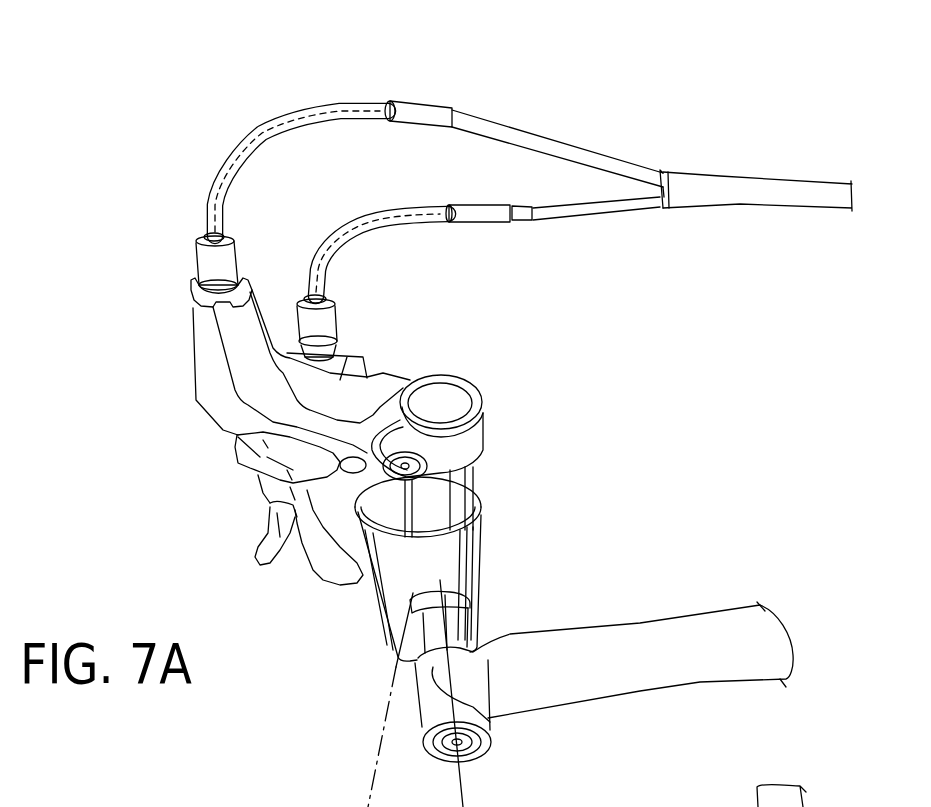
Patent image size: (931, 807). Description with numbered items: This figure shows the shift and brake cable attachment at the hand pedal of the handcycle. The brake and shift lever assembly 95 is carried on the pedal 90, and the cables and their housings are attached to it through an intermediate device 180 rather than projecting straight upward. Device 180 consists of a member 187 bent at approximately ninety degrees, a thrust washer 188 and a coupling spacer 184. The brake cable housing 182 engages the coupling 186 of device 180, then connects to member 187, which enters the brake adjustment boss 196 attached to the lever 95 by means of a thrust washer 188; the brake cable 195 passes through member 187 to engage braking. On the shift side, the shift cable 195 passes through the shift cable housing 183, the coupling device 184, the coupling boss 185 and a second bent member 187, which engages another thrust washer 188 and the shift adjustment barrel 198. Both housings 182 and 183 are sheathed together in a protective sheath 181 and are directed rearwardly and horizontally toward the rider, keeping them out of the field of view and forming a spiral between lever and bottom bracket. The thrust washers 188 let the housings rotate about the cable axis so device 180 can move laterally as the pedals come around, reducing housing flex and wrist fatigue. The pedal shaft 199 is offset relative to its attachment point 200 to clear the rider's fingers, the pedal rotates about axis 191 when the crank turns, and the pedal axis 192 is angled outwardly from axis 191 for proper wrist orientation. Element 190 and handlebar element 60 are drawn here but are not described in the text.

The handlebar 60 is at (707, 620).
The pedal 90 is at (472, 563).
The brake and shift lever assembly 95 is at (258, 474).
The intermediate device 180 is at (283, 90).
The protective sheath 181 is at (750, 181).
The brake cable housing 182 is at (553, 140).
The shift cable housing 183 is at (590, 212).
The coupling spacer 184 is at (523, 221).
The coupling boss 185 is at (482, 210).
The coupling 186 is at (424, 108).
The member bent at approximately 90 degrees 187 is at (249, 148).
The thrust washer 188 is at (196, 245).
The clamp 190 is at (470, 485).
The axis 191 is at (462, 782).
The pedal axis 192 is at (385, 718).
The brake cable / shift cable 195 is at (232, 203).
The brake adjustment boss 196 is at (193, 300).
The shift adjustment barrel 198 is at (340, 342).
The shaft 199 is at (460, 637).
The attachment point 200 is at (470, 594).